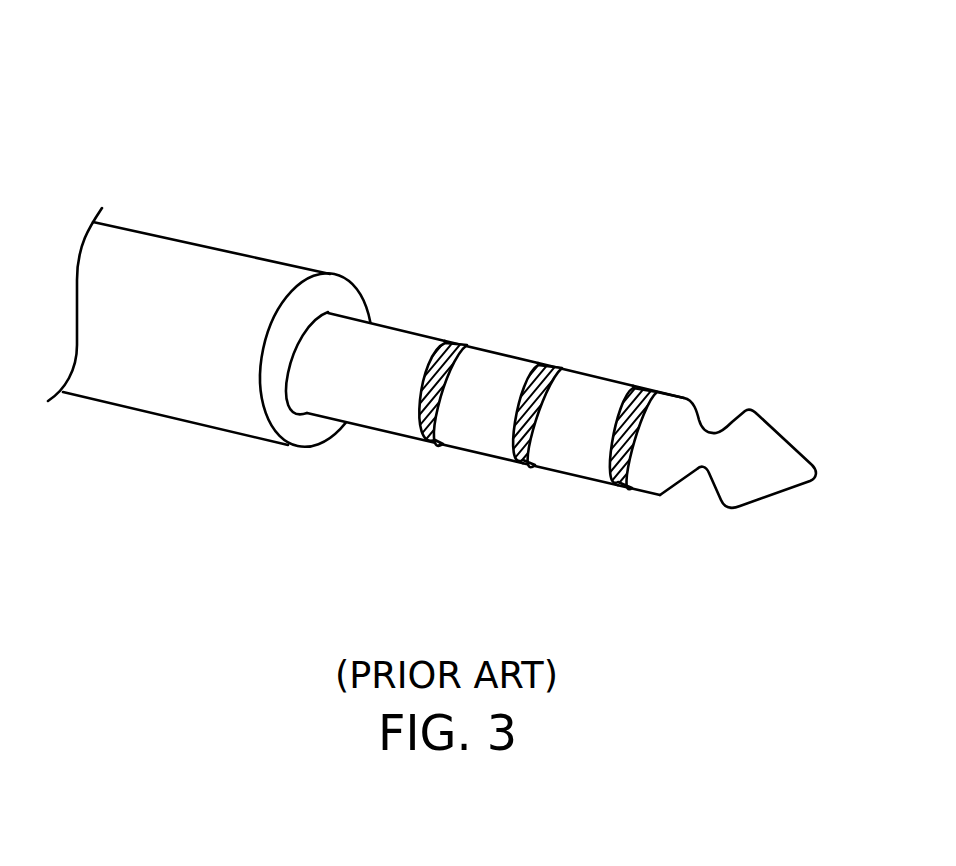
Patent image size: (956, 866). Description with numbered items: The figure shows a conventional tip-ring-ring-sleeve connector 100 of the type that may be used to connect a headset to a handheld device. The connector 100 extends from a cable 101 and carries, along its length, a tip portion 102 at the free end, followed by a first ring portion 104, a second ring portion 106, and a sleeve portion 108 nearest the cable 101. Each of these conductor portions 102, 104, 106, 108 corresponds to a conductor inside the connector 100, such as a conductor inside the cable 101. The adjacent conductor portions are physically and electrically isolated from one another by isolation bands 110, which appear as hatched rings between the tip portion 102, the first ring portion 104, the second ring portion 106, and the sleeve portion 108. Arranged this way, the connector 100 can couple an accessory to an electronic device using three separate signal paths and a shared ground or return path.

The connector 100 is at (613, 74).
The cable 101 is at (227, 247).
The tip portion 102 is at (760, 442).
The first ring portion 104 is at (595, 390).
The second ring portion 106 is at (488, 363).
The sleeve portion 108 is at (388, 345).
The isolation bands 110 is at (630, 487).